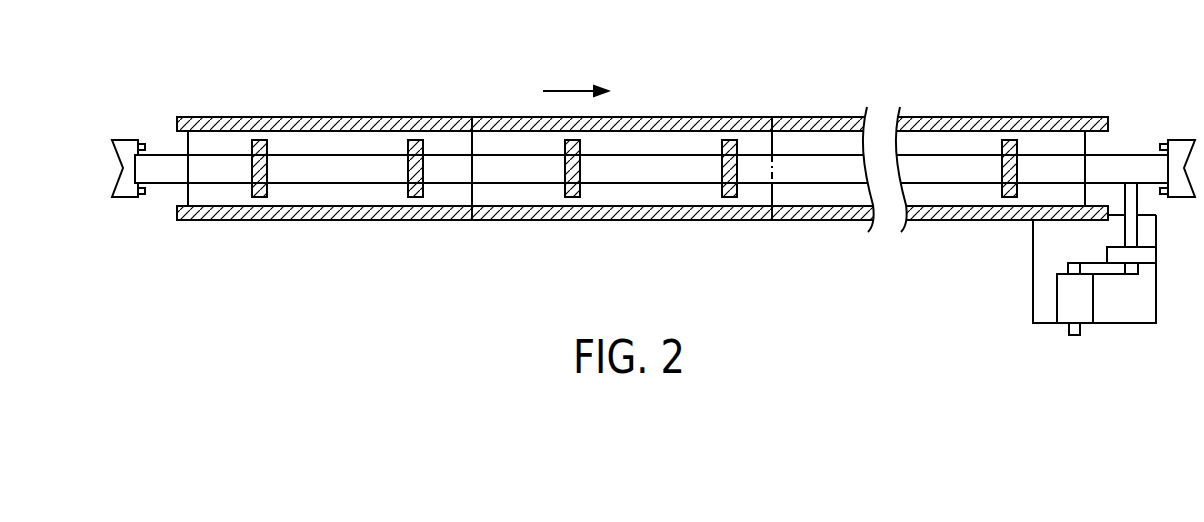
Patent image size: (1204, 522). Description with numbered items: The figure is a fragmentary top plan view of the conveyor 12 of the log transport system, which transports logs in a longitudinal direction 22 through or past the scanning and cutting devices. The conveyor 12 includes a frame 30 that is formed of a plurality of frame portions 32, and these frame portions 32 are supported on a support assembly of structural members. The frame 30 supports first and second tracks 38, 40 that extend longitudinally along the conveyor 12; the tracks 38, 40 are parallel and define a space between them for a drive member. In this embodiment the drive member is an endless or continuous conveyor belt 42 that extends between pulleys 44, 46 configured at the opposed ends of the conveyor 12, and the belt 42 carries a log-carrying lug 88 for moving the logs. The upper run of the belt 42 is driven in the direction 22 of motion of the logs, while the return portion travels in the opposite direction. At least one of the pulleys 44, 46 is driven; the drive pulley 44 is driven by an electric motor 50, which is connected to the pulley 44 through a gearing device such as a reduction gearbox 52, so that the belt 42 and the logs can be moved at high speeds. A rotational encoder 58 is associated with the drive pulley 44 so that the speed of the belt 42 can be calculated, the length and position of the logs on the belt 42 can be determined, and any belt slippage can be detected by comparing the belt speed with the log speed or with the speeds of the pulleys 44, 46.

The conveyor 12 is at (998, 109).
The longitudinal direction 22 is at (573, 88).
The frame 30 is at (763, 109).
The frame portions 32 is at (323, 213).
The first track 38 is at (300, 140).
The second track 40 is at (290, 195).
The conveyor belt 42 is at (335, 163).
The drive pulley 44 is at (1150, 152).
The pulley 46 is at (160, 152).
The electric motor 50 is at (1093, 313).
The reduction gearbox 52 is at (1150, 253).
The rotational encoder 58 is at (1072, 338).
The log-carrying lug 88 is at (415, 190).